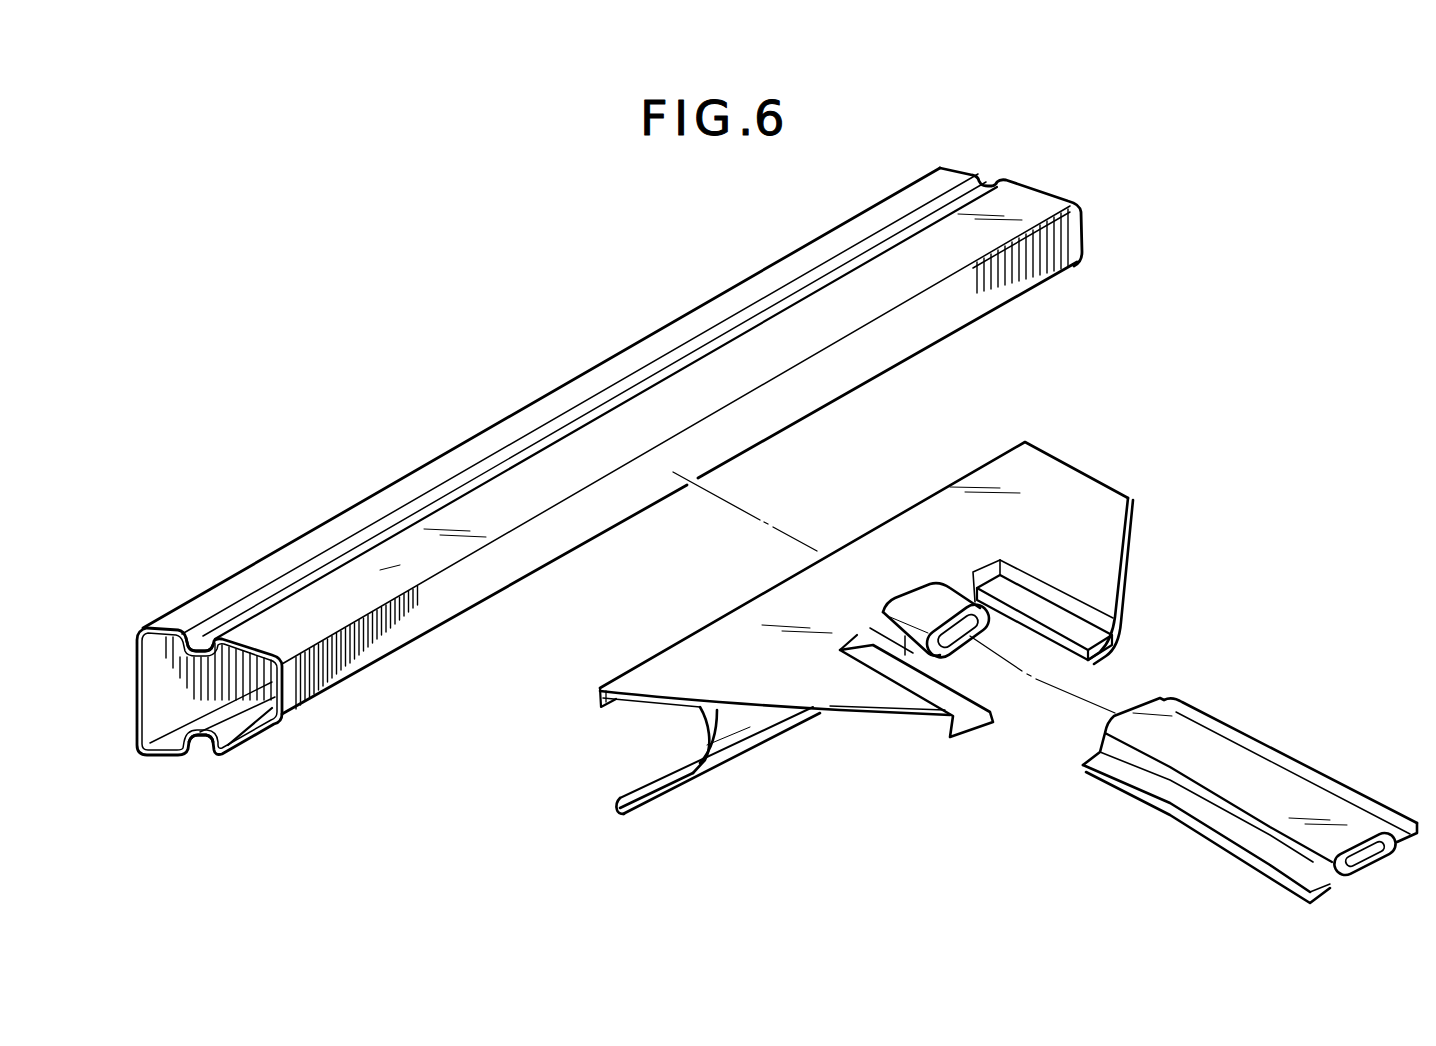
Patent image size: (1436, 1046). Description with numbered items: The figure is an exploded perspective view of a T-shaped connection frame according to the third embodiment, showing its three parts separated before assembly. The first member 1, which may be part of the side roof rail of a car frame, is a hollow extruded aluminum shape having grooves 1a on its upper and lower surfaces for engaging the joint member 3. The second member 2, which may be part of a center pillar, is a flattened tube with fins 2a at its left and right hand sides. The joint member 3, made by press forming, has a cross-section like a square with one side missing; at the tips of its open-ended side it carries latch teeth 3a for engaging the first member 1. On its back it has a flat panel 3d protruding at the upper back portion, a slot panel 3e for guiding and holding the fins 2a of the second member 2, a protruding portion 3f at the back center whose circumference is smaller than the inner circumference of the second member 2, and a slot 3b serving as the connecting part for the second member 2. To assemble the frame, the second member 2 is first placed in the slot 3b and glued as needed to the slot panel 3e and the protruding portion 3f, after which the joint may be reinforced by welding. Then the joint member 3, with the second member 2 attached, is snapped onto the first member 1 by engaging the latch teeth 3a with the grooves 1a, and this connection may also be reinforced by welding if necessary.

The first member 1 is at (609, 494).
The grooves 1a is at (406, 509).
The second member 2 is at (1250, 804).
The fins 2a is at (1280, 753).
The joint member 3 is at (861, 626).
The latch teeth 3a is at (600, 693).
The slot 3b is at (970, 655).
The flat panel 3d is at (1112, 568).
The slot panel 3e is at (1097, 642).
The protruding portion 3f is at (966, 656).